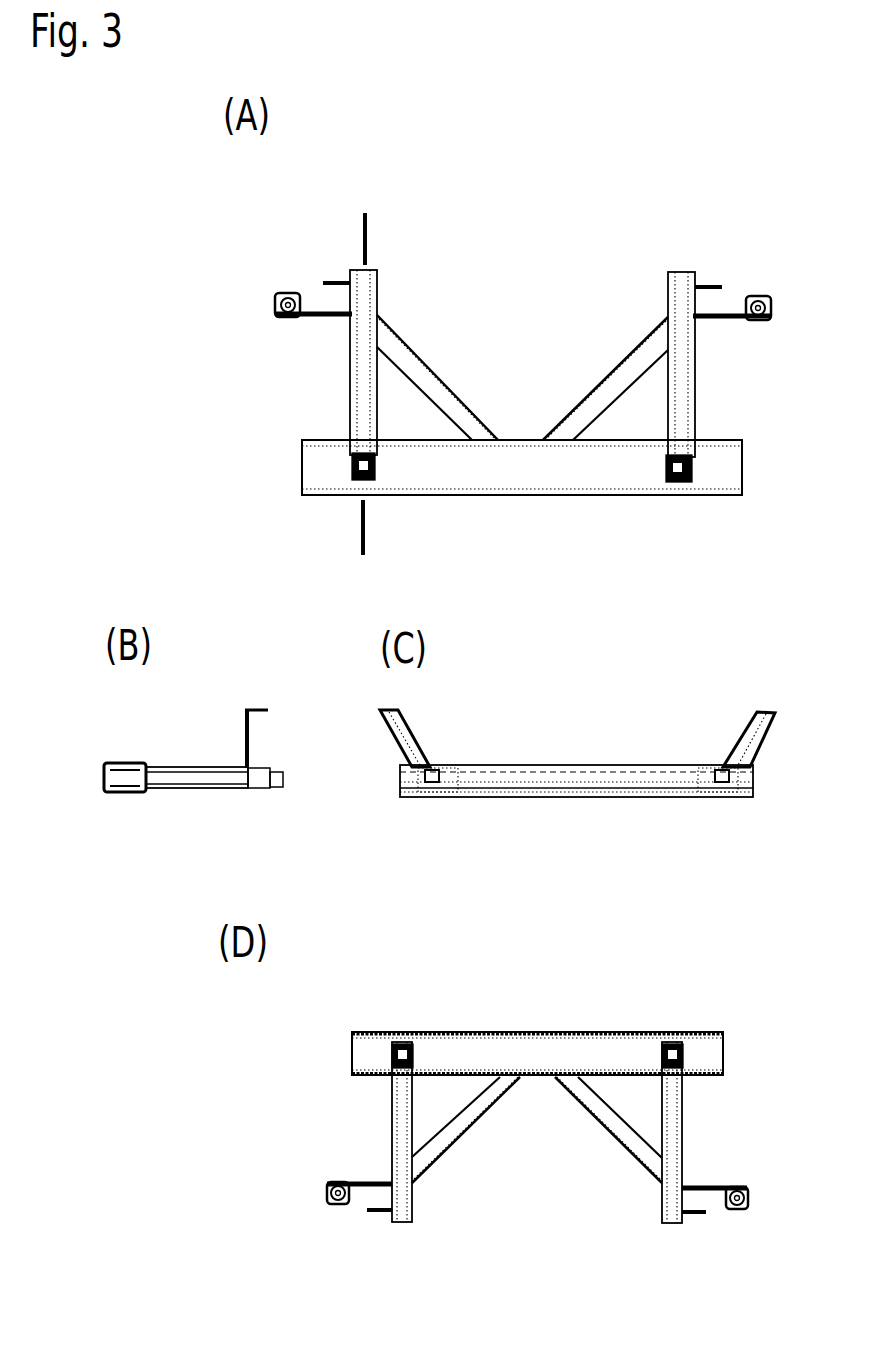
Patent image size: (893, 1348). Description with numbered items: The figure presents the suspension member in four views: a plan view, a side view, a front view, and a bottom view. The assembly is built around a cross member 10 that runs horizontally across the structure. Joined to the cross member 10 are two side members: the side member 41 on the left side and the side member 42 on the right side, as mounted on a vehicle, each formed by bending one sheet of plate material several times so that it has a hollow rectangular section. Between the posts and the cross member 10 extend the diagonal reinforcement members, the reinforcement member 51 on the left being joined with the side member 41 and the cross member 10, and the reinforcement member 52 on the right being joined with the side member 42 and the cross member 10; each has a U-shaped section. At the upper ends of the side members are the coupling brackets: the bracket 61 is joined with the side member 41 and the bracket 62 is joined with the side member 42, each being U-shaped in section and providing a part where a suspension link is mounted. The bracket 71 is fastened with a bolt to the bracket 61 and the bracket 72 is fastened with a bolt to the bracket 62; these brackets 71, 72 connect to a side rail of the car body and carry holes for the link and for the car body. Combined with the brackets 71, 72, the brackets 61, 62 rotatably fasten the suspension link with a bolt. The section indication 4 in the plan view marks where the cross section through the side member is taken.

The cross member 10 is at (513, 477).
The side member 41 is at (357, 365).
The side member 42 is at (688, 365).
The reinforcement member 51 is at (440, 393).
The reinforcement member 52 is at (585, 378).
The bracket 61 is at (340, 282).
The bracket 62 is at (682, 278).
The bracket 71 is at (274, 296).
The bracket 72 is at (756, 297).
The section line of Fig. 4 is at (369, 240).